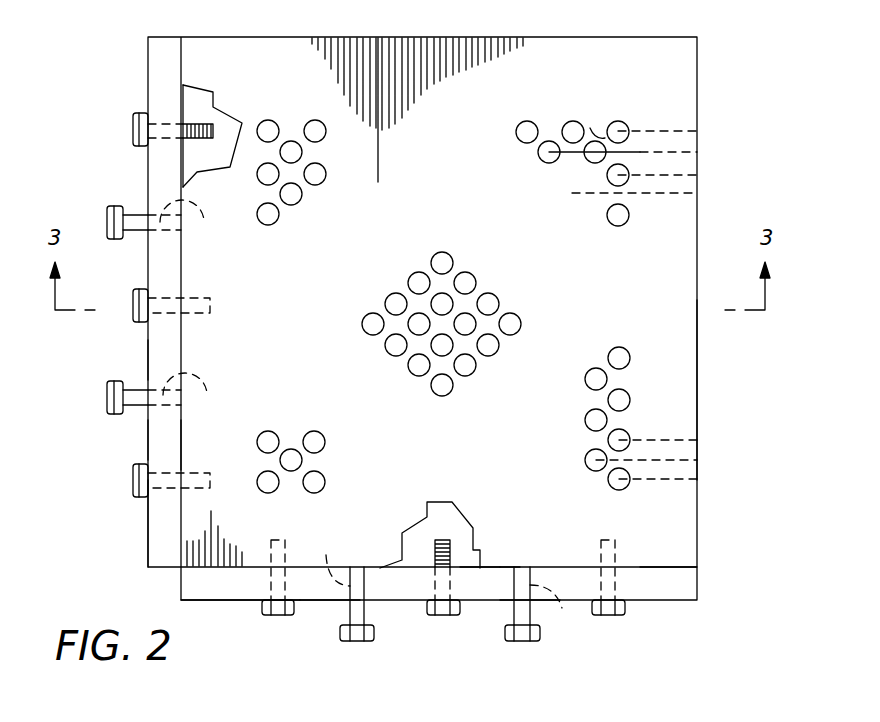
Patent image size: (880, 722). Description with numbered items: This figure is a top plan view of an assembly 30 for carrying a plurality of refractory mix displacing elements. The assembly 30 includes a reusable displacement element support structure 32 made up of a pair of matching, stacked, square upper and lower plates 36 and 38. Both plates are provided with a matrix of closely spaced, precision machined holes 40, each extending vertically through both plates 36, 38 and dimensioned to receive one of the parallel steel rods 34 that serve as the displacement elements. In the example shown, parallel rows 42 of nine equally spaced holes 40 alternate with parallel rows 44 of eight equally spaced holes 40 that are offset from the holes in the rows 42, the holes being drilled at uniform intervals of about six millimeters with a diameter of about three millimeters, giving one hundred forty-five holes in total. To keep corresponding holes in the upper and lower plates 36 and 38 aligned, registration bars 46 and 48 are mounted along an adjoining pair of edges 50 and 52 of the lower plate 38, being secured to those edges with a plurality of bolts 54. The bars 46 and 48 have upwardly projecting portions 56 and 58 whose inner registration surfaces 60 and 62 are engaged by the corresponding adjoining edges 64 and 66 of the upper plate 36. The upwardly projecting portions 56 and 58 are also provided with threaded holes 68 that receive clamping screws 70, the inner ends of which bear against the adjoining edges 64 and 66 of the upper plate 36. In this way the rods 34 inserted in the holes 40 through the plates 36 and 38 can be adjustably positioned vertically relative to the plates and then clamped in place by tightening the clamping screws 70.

The assembly 30 is at (200, 25).
The displacement element support structure 32 is at (698, 392).
The parallel rods 34 is at (315, 131).
The upper plate 36 is at (673, 527).
The lower plate 38 is at (190, 98).
The holes 40 is at (618, 130).
The rows of nine equally spaced holes 42 is at (682, 131).
The rows of eight equally spaced holes 44 is at (682, 152).
The registration bar 46 is at (160, 534).
The registration bar 48 is at (234, 601).
The edge of lower plate 50 is at (182, 160).
The edge of lower plate 52 is at (473, 570).
The bolts 54 is at (133, 128).
The upwardly projecting portion 56 is at (163, 362).
The upwardly projecting portion 58 is at (330, 597).
The inner registration surface 60 is at (183, 450).
The inner registration surface 62 is at (507, 568).
The edge of upper plate 64 is at (181, 438).
The edge of upper plate 66 is at (508, 568).
The threaded holes 68 is at (368, 419).
The clamping screws 70 is at (108, 222).